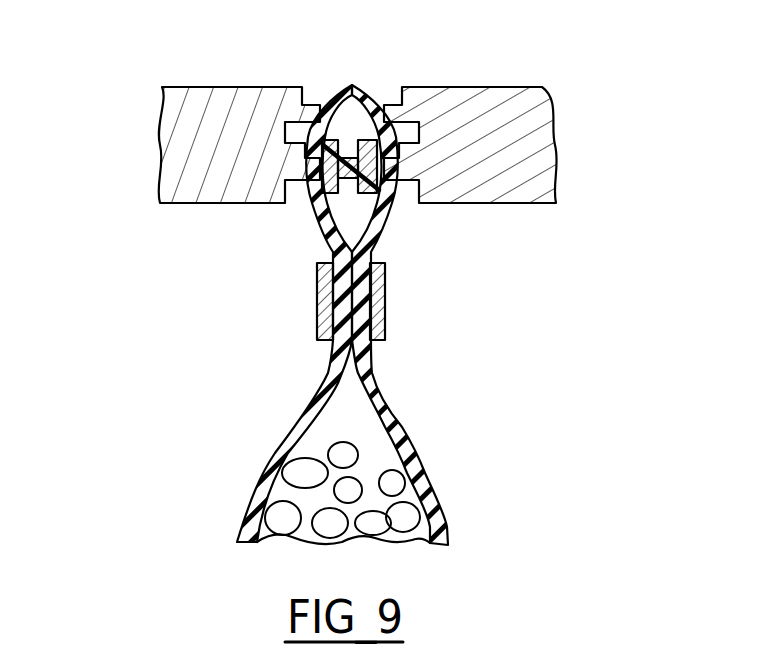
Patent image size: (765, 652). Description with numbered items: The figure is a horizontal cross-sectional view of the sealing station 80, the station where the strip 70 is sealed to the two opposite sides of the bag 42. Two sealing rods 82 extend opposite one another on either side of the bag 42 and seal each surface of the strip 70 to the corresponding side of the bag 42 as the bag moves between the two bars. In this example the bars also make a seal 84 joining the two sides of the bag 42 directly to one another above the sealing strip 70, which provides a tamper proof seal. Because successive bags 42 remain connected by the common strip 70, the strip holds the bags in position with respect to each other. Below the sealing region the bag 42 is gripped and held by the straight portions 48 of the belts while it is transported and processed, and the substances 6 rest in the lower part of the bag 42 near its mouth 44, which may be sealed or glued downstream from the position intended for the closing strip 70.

The sealing station 80 is at (336, 273).
The sealing rods 82 is at (200, 135).
The seal 84 is at (356, 78).
The strip 70 is at (390, 163).
The mouth 44 is at (370, 202).
The straight portions 48 is at (317, 305).
The bag 42 is at (392, 437).
The substances 6 is at (393, 487).